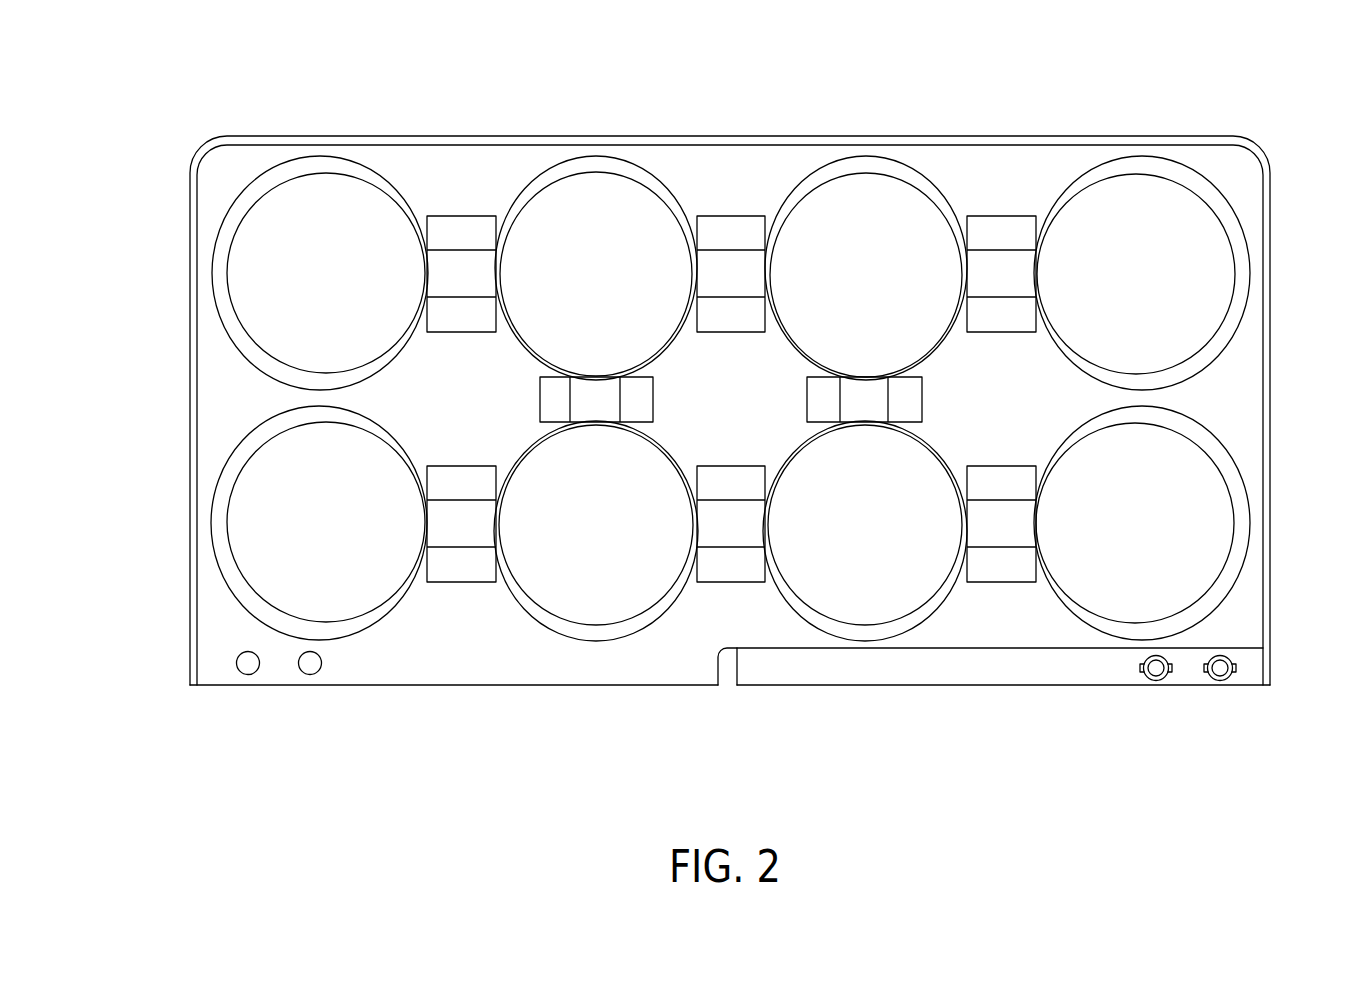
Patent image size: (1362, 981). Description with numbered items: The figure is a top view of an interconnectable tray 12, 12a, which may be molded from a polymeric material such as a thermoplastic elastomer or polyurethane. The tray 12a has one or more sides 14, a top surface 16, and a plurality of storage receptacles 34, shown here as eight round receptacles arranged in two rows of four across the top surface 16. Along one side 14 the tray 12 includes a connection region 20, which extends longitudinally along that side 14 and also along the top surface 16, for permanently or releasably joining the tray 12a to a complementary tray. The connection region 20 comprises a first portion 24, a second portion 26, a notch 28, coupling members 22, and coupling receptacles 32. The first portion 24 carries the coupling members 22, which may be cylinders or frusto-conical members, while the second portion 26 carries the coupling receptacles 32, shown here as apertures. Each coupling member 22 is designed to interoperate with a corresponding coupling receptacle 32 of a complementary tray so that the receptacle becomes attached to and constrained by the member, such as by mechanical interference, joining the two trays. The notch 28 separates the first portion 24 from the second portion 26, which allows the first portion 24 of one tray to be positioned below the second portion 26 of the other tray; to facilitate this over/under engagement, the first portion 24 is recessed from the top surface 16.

The tray 12 is at (730, 355).
The tray 12a is at (730, 415).
The side 14 is at (830, 136).
The top surface 16 is at (235, 160).
The connection region 20 is at (193, 717).
The coupling member 22 is at (1233, 675).
The first portion 24 is at (1267, 695).
The second portion 26 is at (717, 690).
The notch 28 is at (727, 660).
The coupling receptacle 32 is at (247, 652).
The storage receptacle 34 is at (337, 160).